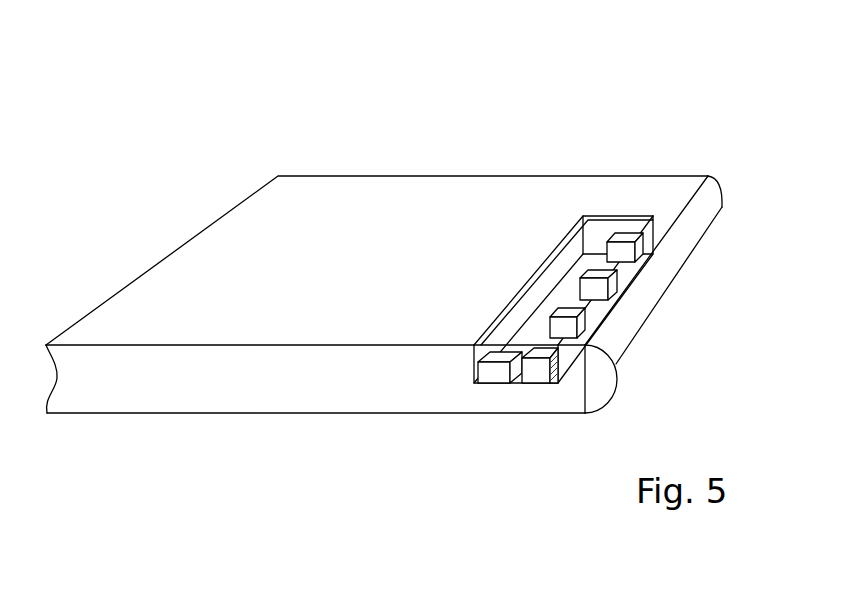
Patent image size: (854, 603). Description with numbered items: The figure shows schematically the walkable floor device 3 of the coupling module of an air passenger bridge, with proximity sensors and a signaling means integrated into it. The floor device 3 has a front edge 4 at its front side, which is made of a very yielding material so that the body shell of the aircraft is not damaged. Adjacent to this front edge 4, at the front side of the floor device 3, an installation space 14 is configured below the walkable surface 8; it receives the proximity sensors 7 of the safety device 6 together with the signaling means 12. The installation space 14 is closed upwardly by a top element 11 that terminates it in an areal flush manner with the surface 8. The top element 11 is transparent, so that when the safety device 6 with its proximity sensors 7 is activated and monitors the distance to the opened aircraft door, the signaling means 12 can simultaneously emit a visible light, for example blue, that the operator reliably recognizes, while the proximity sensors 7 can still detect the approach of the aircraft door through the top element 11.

The floor device 3 is at (424, 212).
The front edge 4 is at (638, 337).
The safety device 6 is at (663, 207).
The proximity sensors 7 is at (545, 350).
The walkable surface 8 is at (298, 200).
The top element 11 is at (477, 347).
The signaling means 12 is at (527, 318).
The installation space 14 is at (517, 384).